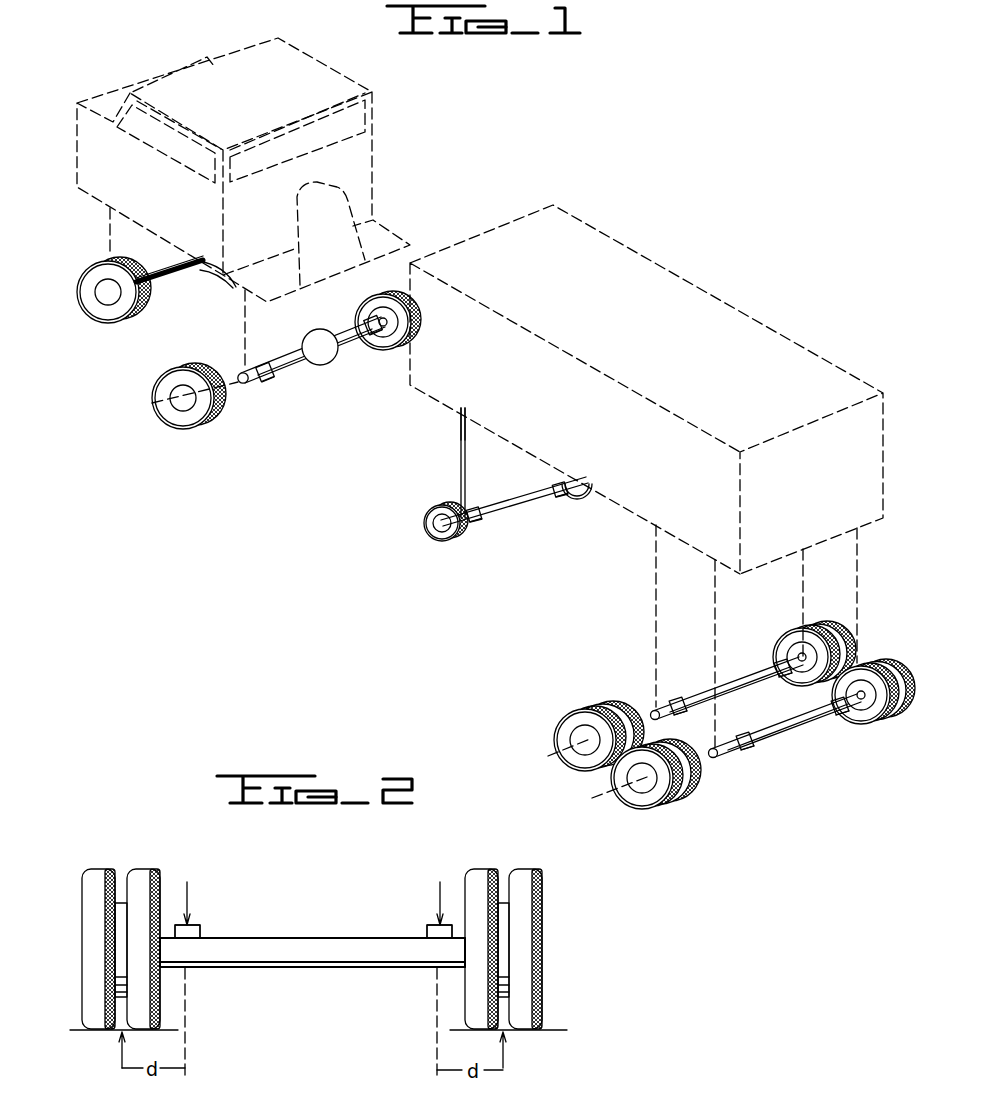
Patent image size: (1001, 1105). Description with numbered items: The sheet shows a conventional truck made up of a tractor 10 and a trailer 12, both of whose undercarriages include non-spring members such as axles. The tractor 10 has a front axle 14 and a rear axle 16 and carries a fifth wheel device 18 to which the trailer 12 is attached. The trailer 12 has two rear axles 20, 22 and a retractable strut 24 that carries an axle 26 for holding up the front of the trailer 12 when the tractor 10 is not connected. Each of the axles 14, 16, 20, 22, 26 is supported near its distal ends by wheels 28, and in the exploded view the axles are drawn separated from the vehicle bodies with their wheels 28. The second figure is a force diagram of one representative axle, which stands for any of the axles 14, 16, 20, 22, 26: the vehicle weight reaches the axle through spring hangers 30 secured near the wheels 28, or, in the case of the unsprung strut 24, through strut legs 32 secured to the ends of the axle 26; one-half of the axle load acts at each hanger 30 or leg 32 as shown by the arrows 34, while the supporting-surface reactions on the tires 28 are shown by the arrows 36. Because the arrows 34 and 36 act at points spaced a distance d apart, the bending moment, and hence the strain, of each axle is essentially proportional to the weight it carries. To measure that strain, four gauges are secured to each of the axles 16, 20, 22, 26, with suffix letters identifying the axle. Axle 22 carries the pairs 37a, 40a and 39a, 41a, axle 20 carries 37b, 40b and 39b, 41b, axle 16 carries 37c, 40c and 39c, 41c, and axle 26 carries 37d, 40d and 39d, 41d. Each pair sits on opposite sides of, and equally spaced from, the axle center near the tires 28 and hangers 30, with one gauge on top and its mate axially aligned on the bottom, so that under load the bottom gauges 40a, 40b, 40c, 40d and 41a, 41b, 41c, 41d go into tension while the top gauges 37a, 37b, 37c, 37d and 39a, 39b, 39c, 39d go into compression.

In FIG. 1, the tractor 10 is at (373, 132).
In FIG. 1, the trailer 12 is at (648, 263).
In FIG. 1, the front axle 14 is at (170, 280).
In FIG. 2, the front axle 14 is at (259, 945).
In FIG. 1, the rear axle 16 is at (300, 365).
In FIG. 2, the rear axle 16 is at (259, 945).
In FIG. 1, the fifth wheel device 18 is at (300, 189).
In FIG. 1, the rear axle 20 is at (722, 676).
In FIG. 2, the rear axle 20 is at (259, 945).
In FIG. 1, the rear axle 22 is at (720, 760).
In FIG. 2, the rear axle 22 is at (259, 945).
In FIG. 1, the retractable strut 24 is at (459, 448).
In FIG. 1, the axle 26 is at (515, 503).
In FIG. 2, the axle 26 is at (259, 945).
In FIG. 1, the wheels 28 is at (100, 320).
In FIG. 2, the wheels 28 is at (97, 867).
In FIG. 2, the spring hangers 30 is at (195, 923).
In FIG. 1, the strut legs 32 is at (461, 427).
In FIG. 2, the strut legs 32 is at (195, 923).
In FIG. 2, the arrows 34 is at (186, 882).
In FIG. 2, the arrows 36 is at (120, 1050).
In FIG. 1, the strain gauge 37a is at (755, 741).
In FIG. 1, the strain gauge 37b is at (672, 698).
In FIG. 1, the strain gauge 37c is at (257, 365).
In FIG. 1, the strain gauge 37d is at (472, 507).
In FIG. 1, the strain gauge 39a is at (838, 717).
In FIG. 1, the strain gauge 39b is at (780, 637).
In FIG. 1, the strain gauge 39c is at (368, 318).
In FIG. 1, the strain gauge 39d is at (557, 479).
In FIG. 1, the strain gauge 40a is at (750, 755).
In FIG. 1, the strain gauge 40b is at (690, 713).
In FIG. 1, the strain gauge 40c is at (273, 386).
In FIG. 1, the strain gauge 40d is at (478, 521).
In FIG. 1, the strain gauge 41a is at (850, 716).
In FIG. 1, the strain gauge 41b is at (790, 678).
In FIG. 1, the strain gauge 41c is at (375, 345).
In FIG. 1, the strain gauge 41d is at (563, 496).